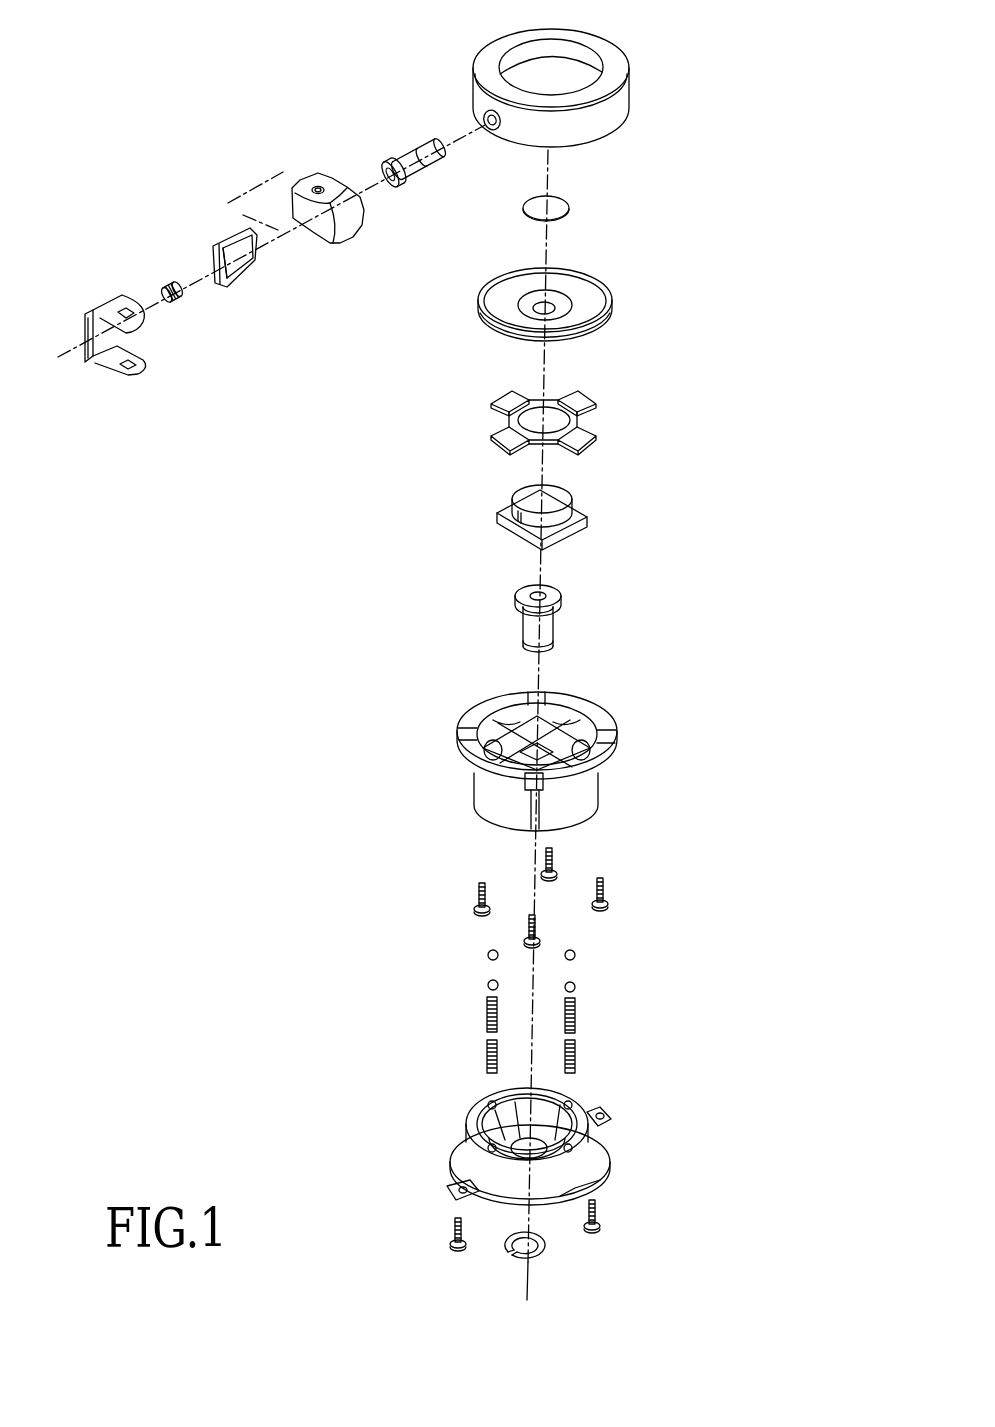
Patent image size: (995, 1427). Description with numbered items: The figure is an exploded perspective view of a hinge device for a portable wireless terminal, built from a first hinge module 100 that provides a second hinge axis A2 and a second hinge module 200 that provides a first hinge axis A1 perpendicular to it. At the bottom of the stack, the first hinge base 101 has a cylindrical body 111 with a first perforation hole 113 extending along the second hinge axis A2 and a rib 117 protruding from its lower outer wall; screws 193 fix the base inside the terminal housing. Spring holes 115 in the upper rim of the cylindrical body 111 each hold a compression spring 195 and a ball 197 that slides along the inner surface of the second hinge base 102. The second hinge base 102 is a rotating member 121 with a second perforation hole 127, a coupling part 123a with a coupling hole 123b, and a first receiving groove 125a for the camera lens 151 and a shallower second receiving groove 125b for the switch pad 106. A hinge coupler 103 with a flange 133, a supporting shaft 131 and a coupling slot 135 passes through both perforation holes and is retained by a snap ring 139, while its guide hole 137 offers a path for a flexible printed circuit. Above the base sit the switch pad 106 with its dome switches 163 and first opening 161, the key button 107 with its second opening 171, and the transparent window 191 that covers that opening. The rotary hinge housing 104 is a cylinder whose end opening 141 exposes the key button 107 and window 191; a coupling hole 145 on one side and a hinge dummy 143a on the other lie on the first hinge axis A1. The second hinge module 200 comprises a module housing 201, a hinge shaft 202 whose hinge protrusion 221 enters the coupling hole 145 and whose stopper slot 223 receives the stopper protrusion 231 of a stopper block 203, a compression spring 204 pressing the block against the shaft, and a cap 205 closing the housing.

The first hinge module 100 is at (798, 333).
The first hinge base 101 is at (509, 1114).
The second hinge base 102 is at (526, 746).
The hinge coupler 103 is at (539, 614).
The rotary hinge housing 104 is at (580, 105).
The switch pad 106 is at (550, 424).
The key button 107 is at (546, 300).
The cylindrical body 111 is at (462, 1158).
The first perforation hole 113 is at (480, 1103).
The spring hole 115 is at (568, 1093).
The rib 117 is at (455, 1135).
The rotating member 121 is at (473, 788).
The coupling part 123a is at (610, 768).
The coupling hole 123b is at (545, 788).
The first receiving groove 125a is at (547, 723).
The second receiving groove 125b is at (488, 716).
The second perforation hole 127 is at (570, 742).
The supporting shaft 131 is at (525, 620).
The flange 133 is at (560, 590).
The coupling slot 135 is at (523, 643).
The guide hole 137 is at (532, 594).
The snap ring 139 is at (545, 1243).
The opening 141 is at (515, 43).
The hinge dummy 143a is at (614, 48).
The coupling hole 145 is at (492, 132).
The camera lens 151 is at (577, 527).
The first opening 161 is at (528, 417).
The dome switches 163 is at (583, 432).
The second opening 171 is at (533, 310).
The transparent window 191 is at (567, 210).
The screw 193 is at (475, 897).
The compression spring 195 is at (577, 1013).
The ball 197 is at (575, 956).
The second hinge module 200 is at (169, 133).
The module housing 201 is at (309, 163).
The hinge shaft 202 is at (376, 146).
The stopper block 203 is at (246, 300).
The compression spring 204 is at (168, 290).
The cap 205 is at (112, 310).
The hinge protrusion 221 is at (427, 138).
The stopper slot 223 is at (413, 180).
The stopper protrusion 231 is at (228, 235).
The first hinge axis A1 is at (58, 357).
The second hinge axis A2 is at (527, 1287).